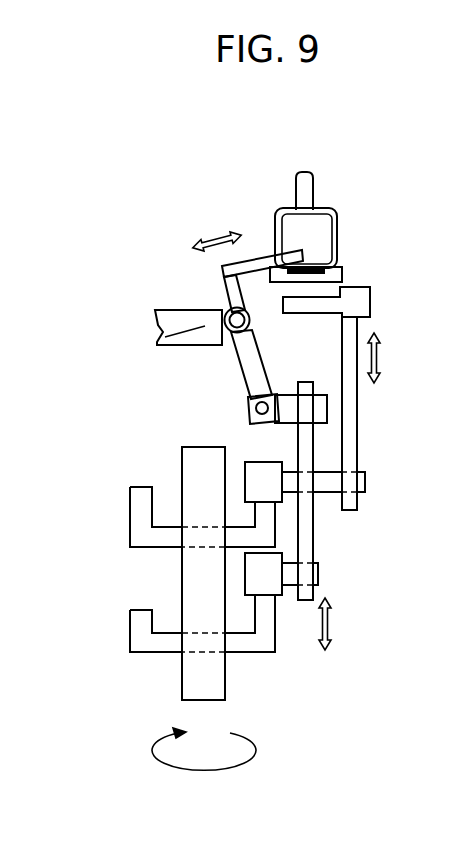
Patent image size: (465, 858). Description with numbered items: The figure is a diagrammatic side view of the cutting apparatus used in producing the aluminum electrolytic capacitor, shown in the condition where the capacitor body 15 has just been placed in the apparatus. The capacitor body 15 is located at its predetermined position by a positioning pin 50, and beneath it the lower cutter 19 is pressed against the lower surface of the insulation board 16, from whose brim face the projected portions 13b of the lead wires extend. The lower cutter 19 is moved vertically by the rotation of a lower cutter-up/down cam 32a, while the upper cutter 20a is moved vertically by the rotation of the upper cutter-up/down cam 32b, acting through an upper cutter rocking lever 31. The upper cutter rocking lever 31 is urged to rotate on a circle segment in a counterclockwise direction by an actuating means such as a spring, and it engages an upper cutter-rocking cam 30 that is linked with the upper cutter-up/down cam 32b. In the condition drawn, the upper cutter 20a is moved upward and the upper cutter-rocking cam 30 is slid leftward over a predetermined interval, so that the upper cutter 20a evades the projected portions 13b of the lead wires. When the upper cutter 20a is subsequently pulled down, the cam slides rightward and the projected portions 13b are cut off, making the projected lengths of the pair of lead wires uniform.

The positioning pin 50 is at (305, 181).
The capacitor body 15 is at (339, 201).
The insulation board 16 is at (340, 270).
The projected portions of the lead wires 13b is at (371, 283).
The lower cutter 19 is at (362, 308).
The upper cutter 20a is at (220, 272).
The upper cutter-rocking cam 30 is at (152, 332).
The upper cutter rocking lever 31 is at (243, 375).
The lower cutter-up/down cam 32a is at (137, 502).
The upper cutter-up/down cam 32b is at (137, 623).